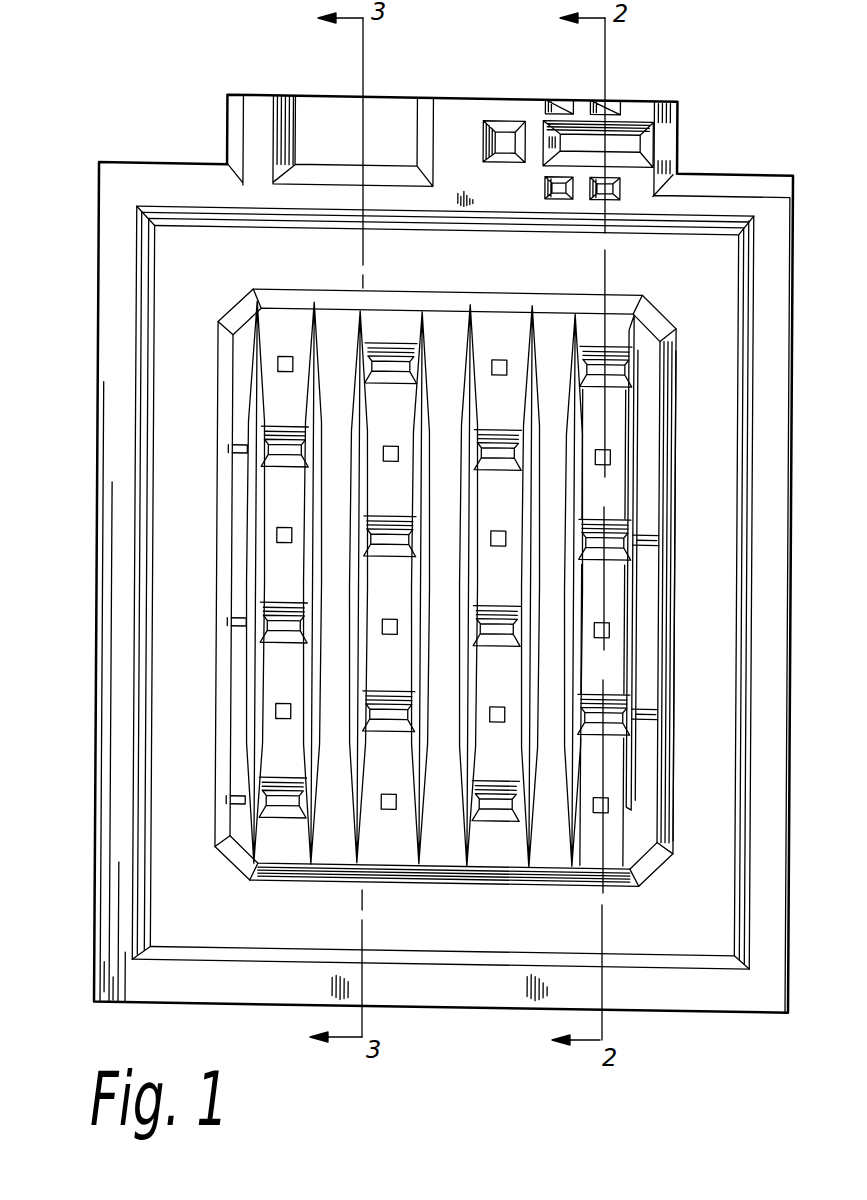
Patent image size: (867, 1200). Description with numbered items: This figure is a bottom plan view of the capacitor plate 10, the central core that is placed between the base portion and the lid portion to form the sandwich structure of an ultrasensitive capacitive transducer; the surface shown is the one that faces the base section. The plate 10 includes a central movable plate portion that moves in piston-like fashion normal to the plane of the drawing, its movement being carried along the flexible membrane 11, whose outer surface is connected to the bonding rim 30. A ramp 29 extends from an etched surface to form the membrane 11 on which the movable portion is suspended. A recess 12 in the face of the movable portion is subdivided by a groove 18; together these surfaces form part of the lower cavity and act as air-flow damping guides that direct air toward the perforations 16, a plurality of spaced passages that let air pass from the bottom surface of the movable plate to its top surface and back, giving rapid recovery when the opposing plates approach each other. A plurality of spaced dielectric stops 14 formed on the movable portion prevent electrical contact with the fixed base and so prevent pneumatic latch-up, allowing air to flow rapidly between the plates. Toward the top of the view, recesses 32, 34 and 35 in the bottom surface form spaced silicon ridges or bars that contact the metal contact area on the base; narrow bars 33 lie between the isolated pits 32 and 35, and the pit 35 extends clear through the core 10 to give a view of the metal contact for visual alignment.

The capacitor plate 10 is at (208, 141).
The flexible membrane 11 is at (172, 622).
The recess 12 is at (612, 413).
The stops 14 is at (613, 458).
The perforations 16 is at (282, 625).
The groove 18 is at (260, 767).
The ramp 29 is at (148, 507).
The bonding rim 30 is at (115, 880).
The recess 32 is at (602, 100).
The narrow bars 33 is at (640, 130).
The recess 34 is at (108, 393).
The pit 35 is at (507, 143).